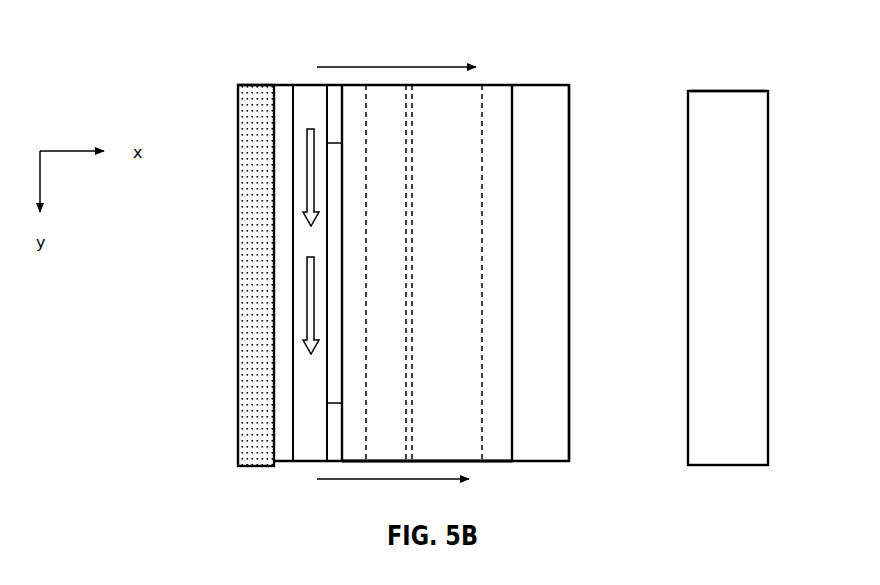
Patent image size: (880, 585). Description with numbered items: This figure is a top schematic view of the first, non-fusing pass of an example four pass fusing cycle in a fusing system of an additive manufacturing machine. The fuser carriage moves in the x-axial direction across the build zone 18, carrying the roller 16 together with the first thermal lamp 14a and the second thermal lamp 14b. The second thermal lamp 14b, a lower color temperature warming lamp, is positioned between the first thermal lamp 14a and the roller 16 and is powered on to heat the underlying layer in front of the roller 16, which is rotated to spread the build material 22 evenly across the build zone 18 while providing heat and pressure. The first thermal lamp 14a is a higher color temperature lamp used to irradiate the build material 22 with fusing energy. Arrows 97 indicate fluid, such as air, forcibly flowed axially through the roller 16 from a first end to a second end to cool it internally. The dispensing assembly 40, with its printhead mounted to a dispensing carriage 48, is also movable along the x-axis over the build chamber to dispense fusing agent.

The arrows 97 is at (306, 150).
The roller 16 is at (307, 232).
The build material 22 is at (250, 389).
The second thermal lamp 14b is at (403, 269).
The first thermal lamp 14a is at (465, 258).
The build zone 18 is at (552, 257).
The dispensing assembly 40 is at (741, 253).
The dispensing carriage 48 is at (715, 90).